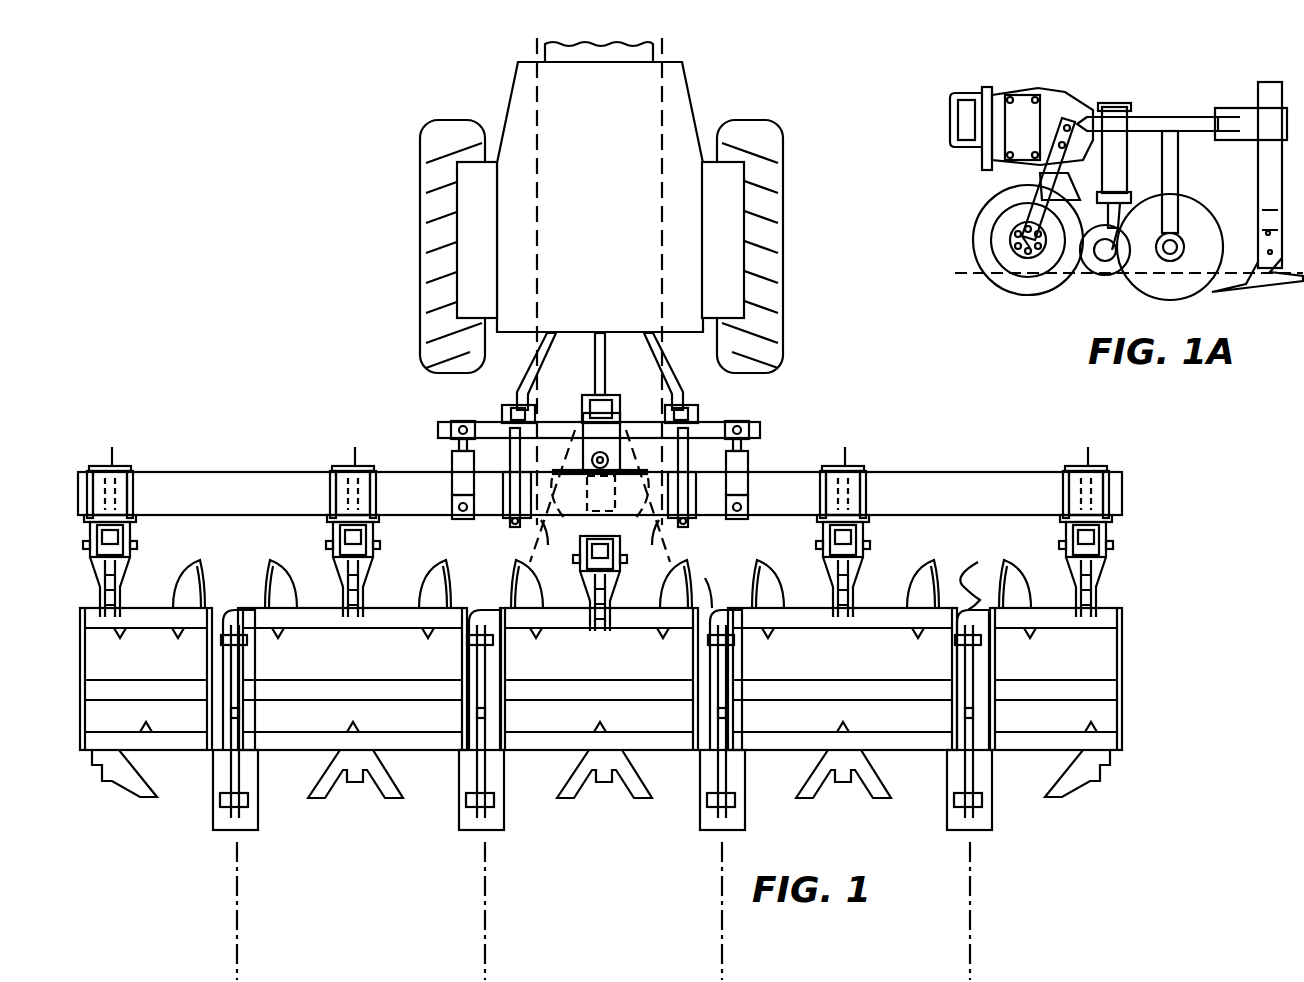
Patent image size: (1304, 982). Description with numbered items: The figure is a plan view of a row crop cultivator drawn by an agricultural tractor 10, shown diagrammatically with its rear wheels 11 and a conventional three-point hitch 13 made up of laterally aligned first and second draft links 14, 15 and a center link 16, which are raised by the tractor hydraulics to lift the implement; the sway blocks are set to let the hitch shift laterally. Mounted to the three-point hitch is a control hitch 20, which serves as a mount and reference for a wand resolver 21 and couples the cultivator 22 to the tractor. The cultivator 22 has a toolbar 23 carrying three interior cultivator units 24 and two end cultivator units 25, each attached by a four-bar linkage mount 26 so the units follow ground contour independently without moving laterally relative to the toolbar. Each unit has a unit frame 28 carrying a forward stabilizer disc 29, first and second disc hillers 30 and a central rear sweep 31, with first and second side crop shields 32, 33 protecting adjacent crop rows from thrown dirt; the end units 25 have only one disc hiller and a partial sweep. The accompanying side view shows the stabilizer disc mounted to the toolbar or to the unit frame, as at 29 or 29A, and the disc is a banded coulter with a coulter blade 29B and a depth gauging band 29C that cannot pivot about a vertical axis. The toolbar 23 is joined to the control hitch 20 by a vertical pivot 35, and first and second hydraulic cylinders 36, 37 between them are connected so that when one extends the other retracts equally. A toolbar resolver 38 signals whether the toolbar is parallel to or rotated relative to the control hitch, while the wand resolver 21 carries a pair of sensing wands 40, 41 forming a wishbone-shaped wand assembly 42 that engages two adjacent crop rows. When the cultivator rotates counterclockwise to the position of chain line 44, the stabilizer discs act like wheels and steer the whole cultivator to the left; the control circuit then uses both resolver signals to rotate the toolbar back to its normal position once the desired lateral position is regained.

In FIG. 1, the agricultural tractor 10 is at (721, 86).
In FIG. 1, the rear wheels 11 is at (430, 118).
In FIG. 1, the three-point hitch 13 is at (515, 387).
In FIG. 1, the first draft link 14 is at (538, 364).
In FIG. 1, the second draft link 15 is at (674, 372).
In FIG. 1, the center link 16 is at (606, 380).
In FIG. 1, the control hitch 20 is at (774, 416).
In FIG. 1, the wand resolver 21 is at (632, 397).
In FIG. 1, the cultivator 22 is at (983, 457).
In FIG. 1, the toolbar 23 is at (250, 472).
In FIG. 1A, the toolbar 23 is at (942, 135).
In FIG. 1, the interior cultivator unit 24 is at (360, 808).
In FIG. 1A, the interior cultivator unit 24 is at (1193, 85).
In FIG. 1, the end cultivator unit 25 is at (99, 798).
In FIG. 1A, the four-bar linkage mount 26 is at (1034, 78).
In FIG. 1, the unit frame 28 is at (805, 650).
In FIG. 1A, the unit frame 28 is at (1144, 117).
In FIG. 1, the stabilizer disc 29 is at (846, 455).
In FIG. 1A, the stabilizer disc 29 is at (966, 260).
In FIG. 1A, the stabilizer disc 29A is at (1212, 208).
In FIG. 1, the coulter blade 29B is at (140, 434).
In FIG. 1A, the coulter blade 29B is at (992, 194).
In FIG. 1, the depth gauging band 29C is at (138, 466).
In FIG. 1A, the depth gauging band 29C is at (992, 218).
In FIG. 1, the disc hiller 30 is at (766, 576).
In FIG. 1A, the disc hiller 30 is at (1097, 298).
In FIG. 1, the central rear sweep 31 is at (886, 762).
In FIG. 1A, the central rear sweep 31 is at (1255, 291).
In FIG. 1, the first side crop shield 32 is at (710, 578).
In FIG. 1, the second side crop shield 33 is at (978, 562).
In FIG. 1, the vertical pivot 35 is at (612, 458).
In FIG. 1, the first hydraulic cylinder 36 is at (758, 433).
In FIG. 1, the second hydraulic cylinder 37 is at (442, 432).
In FIG. 1, the toolbar resolver 38 is at (578, 465).
In FIG. 1, the sensing wand 40 is at (659, 545).
In FIG. 1, the sensing wand 41 is at (541, 545).
In FIG. 1, the wand assembly 42 is at (566, 512).
In FIG. 1, the chain line 44 is at (890, 452).